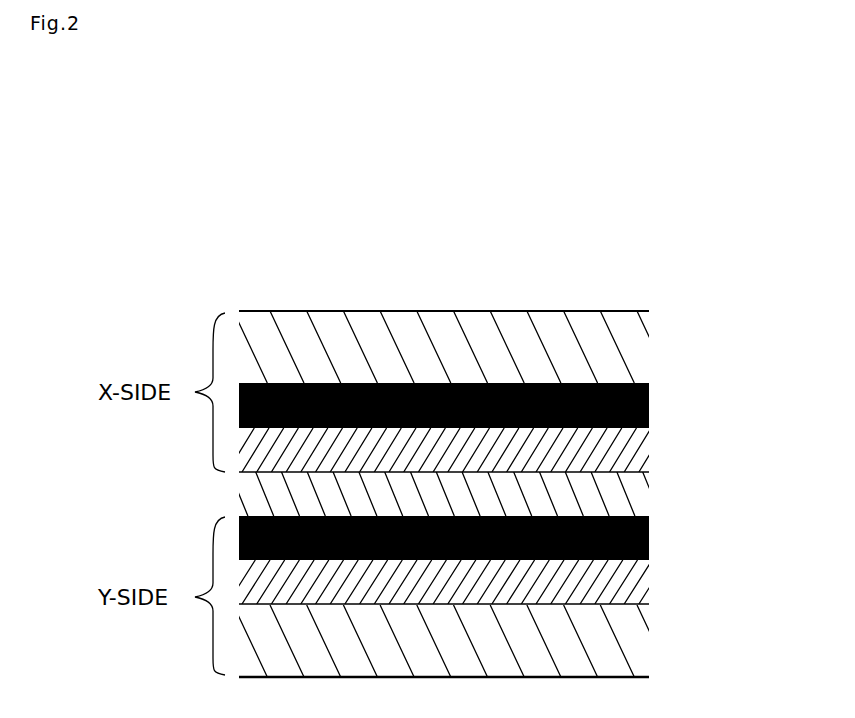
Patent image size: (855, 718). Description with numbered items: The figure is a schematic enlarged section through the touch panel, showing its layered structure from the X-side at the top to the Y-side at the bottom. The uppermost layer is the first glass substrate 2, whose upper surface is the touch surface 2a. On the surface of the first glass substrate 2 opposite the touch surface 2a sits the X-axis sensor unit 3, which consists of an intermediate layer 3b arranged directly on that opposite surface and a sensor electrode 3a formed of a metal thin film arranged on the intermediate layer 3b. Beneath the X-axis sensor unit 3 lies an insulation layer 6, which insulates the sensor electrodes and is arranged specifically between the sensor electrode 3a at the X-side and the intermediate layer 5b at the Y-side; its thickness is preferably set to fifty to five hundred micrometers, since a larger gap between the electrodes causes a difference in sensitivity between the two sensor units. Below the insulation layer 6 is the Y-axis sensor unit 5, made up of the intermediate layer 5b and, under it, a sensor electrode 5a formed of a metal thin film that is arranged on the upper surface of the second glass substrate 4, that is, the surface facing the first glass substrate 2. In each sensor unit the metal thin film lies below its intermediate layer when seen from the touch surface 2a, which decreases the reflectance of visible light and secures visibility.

The first glass substrate 2 is at (637, 338).
The touch surface 2a is at (542, 311).
The X-axis sensor unit 3 is at (505, 427).
The sensor electrode 3a is at (633, 453).
The intermediate layer 3b is at (650, 403).
The insulation layer 6 is at (632, 502).
The Y-axis sensor unit 5 is at (505, 560).
The sensor electrode 5a is at (637, 587).
The intermediate layer 5b is at (650, 540).
The second glass substrate 4 is at (635, 647).